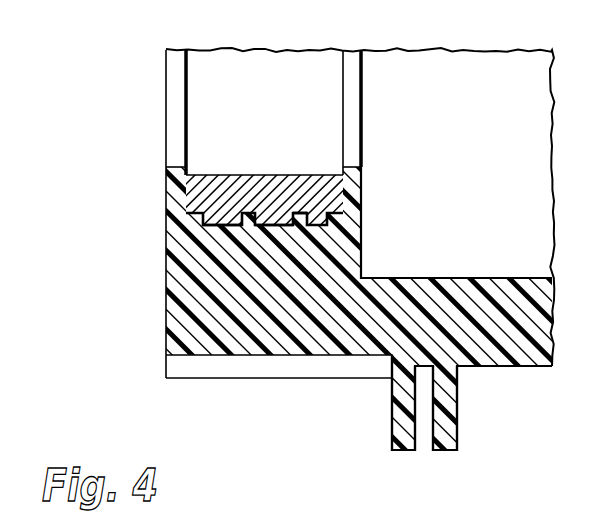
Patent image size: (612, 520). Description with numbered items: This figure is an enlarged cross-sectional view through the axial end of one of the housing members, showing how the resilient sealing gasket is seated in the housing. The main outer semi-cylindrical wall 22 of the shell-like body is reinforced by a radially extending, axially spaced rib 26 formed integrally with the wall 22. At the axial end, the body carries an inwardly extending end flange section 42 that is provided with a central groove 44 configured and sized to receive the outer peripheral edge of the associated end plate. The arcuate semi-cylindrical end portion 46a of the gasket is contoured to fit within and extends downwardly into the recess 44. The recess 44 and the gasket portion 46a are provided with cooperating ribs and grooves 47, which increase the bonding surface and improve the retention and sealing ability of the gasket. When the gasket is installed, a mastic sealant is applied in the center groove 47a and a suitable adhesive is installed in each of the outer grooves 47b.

The main outer semi-cylindrical wall 22 is at (473, 278).
The reinforcing rib 26 is at (392, 450).
The end flange section 42 is at (167, 240).
The central groove 44 is at (222, 133).
The semi-cylindrical end portion 46a is at (265, 175).
The cooperating ribs and grooves 47 is at (190, 214).
The center groove 47a is at (250, 228).
The outer groove 47b is at (207, 222).